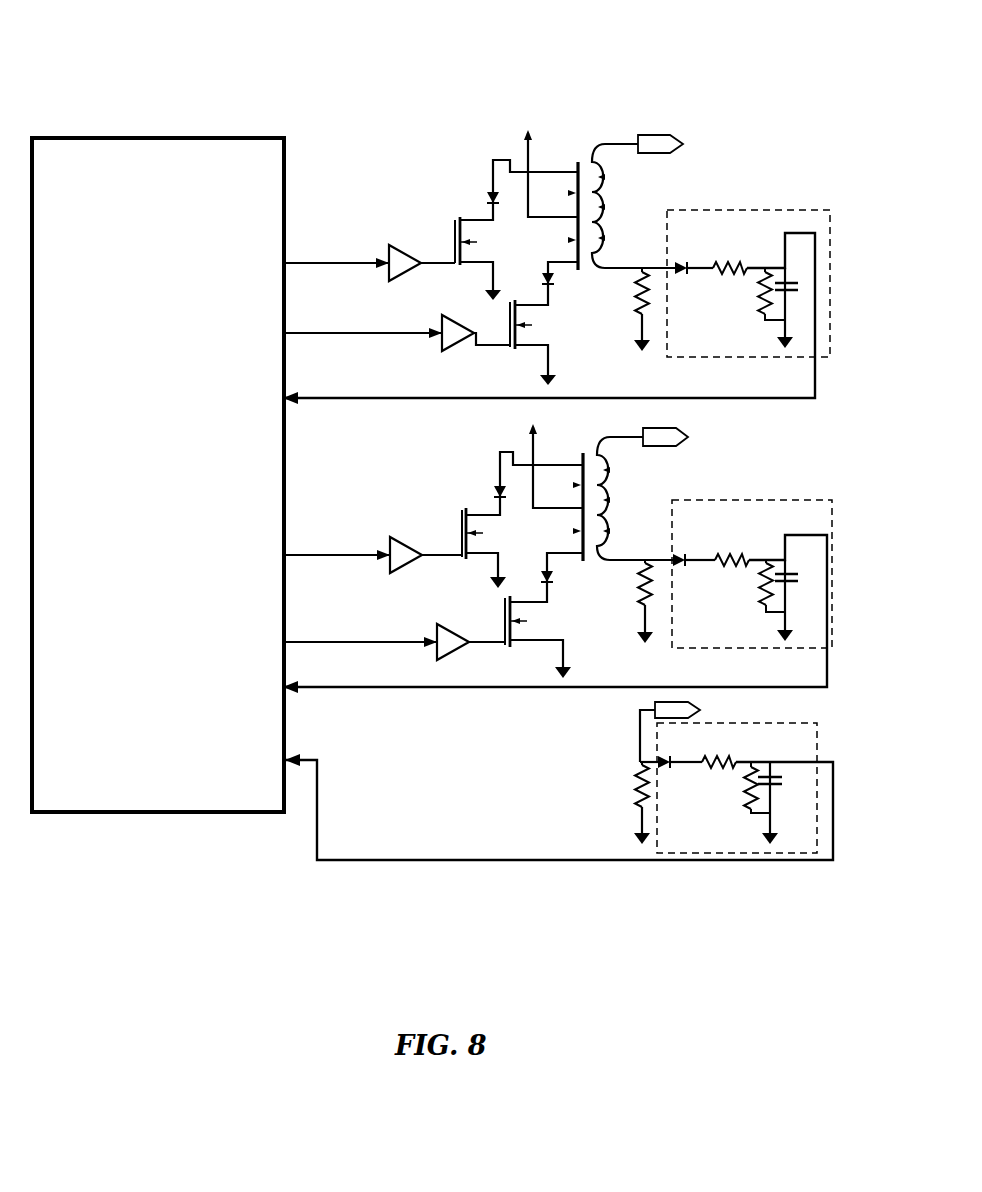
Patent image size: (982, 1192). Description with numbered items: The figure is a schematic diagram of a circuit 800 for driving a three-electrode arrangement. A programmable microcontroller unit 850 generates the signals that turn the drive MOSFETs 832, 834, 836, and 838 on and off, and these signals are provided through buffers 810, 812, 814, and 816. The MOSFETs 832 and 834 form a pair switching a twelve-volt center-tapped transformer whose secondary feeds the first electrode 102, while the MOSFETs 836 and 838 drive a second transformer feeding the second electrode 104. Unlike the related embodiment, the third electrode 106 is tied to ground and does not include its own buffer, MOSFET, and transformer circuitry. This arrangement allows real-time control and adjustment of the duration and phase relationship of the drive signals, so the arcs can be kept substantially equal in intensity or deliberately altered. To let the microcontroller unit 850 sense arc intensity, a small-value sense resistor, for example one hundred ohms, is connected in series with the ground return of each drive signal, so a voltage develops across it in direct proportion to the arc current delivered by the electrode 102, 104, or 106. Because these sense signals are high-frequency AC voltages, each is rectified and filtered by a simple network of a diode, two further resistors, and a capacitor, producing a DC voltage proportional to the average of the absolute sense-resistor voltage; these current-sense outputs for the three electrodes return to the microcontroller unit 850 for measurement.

The circuit 800 is at (432, 477).
The microcontroller unit 850 is at (158, 475).
The buffer 810 is at (369, 254).
The buffer 812 is at (396, 331).
The buffer 814 is at (372, 553).
The buffer 816 is at (394, 641).
The drive MOSFET 832 is at (477, 242).
The drive MOSFET 834 is at (532, 325).
The drive MOSFET 836 is at (483, 533).
The drive MOSFET 838 is at (527, 621).
The electrode 102 is at (683, 147).
The electrode 104 is at (688, 440).
The third electrode 106 is at (699, 707).